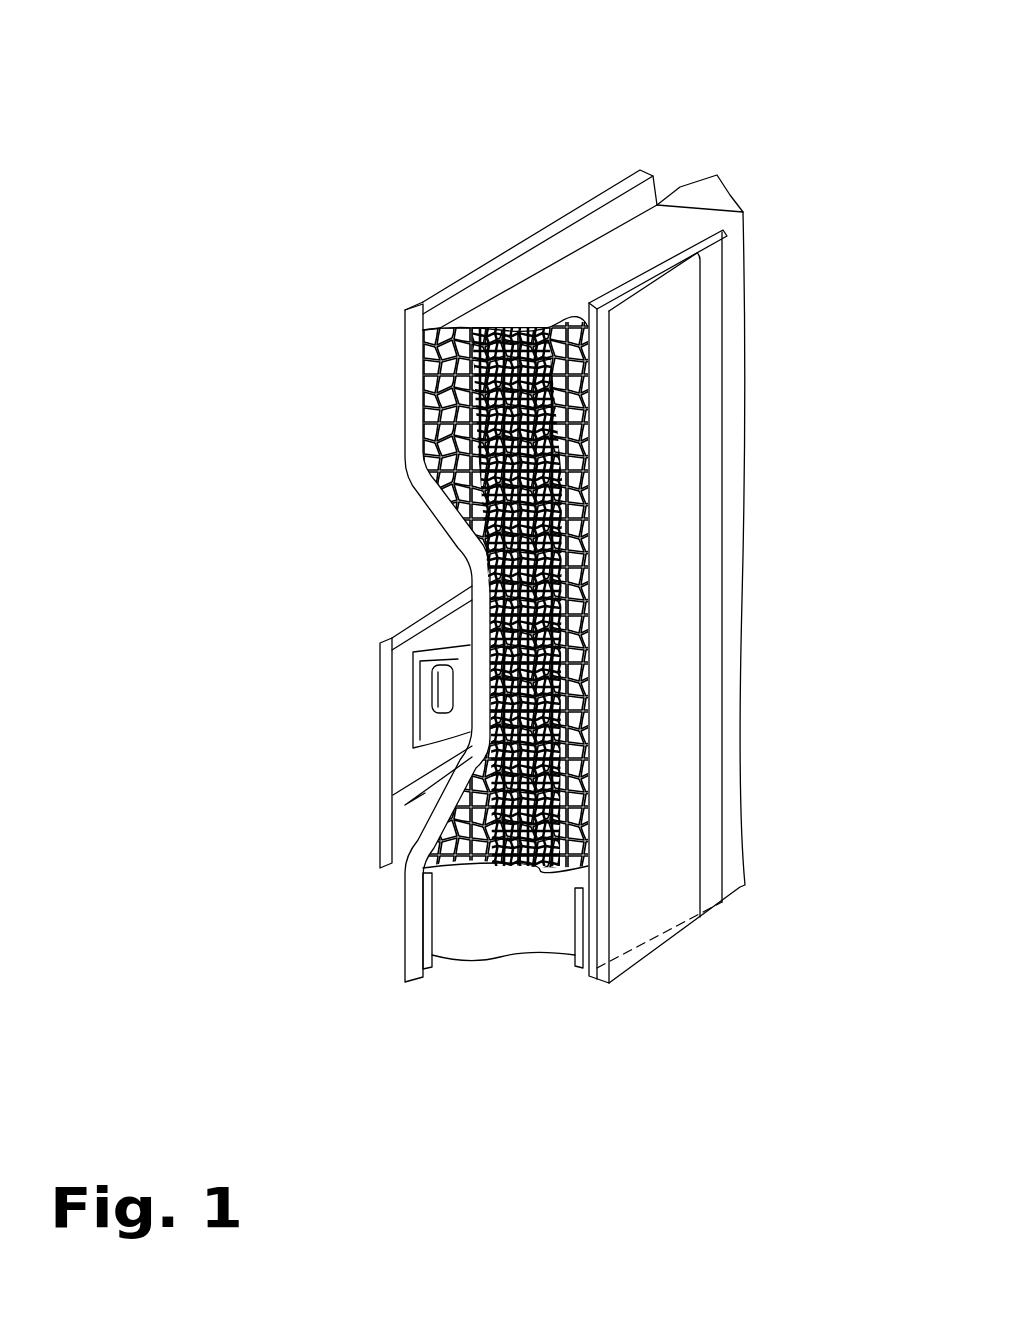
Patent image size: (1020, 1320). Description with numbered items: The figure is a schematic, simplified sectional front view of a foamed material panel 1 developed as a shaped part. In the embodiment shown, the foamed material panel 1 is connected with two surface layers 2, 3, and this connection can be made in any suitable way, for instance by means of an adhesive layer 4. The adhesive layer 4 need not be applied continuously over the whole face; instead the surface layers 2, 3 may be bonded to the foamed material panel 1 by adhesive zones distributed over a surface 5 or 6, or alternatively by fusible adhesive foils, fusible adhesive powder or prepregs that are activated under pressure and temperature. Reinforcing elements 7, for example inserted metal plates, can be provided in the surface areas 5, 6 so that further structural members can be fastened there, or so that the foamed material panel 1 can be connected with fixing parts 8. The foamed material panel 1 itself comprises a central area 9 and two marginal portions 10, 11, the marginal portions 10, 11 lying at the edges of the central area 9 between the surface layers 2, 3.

The foamed material panel 1 is at (569, 561).
The surface layer 2 is at (412, 420).
The surface layer 3 is at (592, 968).
The adhesive layer 4 is at (712, 405).
The surface 5 is at (742, 275).
The surface 6 is at (689, 184).
The reinforcing element 7 is at (437, 958).
The fixing part 8 is at (385, 753).
The central area 9 is at (505, 326).
The marginal portion 10 is at (437, 329).
The marginal portion 11 is at (565, 320).